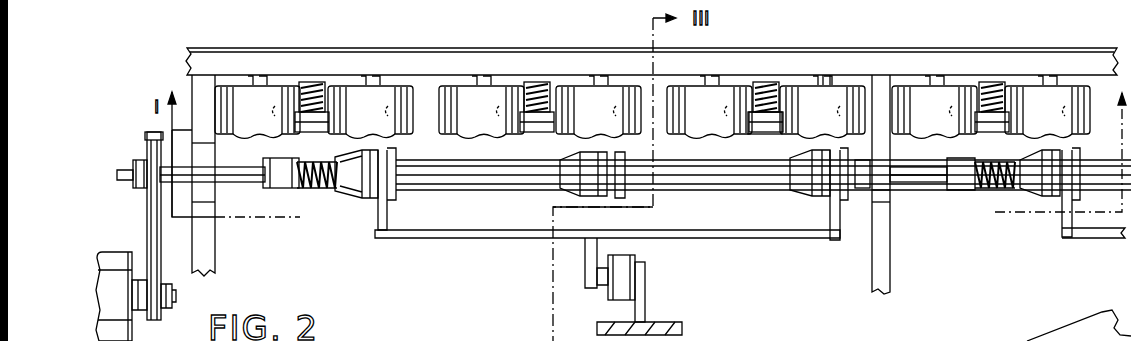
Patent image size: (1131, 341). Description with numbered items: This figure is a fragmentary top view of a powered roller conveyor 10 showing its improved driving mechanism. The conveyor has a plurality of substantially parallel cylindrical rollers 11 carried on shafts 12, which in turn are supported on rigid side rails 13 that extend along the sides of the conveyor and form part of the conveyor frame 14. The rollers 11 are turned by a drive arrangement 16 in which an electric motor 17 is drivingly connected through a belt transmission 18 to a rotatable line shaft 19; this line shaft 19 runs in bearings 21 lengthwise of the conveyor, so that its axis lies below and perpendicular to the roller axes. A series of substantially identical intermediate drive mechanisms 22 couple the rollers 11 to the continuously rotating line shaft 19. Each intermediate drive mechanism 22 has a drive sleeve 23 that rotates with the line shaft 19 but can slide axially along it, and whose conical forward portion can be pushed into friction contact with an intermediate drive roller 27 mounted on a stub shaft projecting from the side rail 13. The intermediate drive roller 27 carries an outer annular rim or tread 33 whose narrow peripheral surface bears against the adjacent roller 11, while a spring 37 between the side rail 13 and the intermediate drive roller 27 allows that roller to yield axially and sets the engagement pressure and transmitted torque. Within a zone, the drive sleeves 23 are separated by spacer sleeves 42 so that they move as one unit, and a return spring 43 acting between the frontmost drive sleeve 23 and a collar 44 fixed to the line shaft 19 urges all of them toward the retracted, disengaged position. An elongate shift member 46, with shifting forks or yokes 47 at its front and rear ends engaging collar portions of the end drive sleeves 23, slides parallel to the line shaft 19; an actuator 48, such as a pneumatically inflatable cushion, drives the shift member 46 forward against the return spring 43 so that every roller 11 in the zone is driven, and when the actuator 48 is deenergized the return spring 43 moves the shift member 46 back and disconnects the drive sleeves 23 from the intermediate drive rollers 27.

The powered roller conveyor 10 is at (430, 40).
The cylindrical rollers 11 is at (385, 100).
The shafts 12 is at (825, 75).
The side rails 13 is at (318, 58).
The conveyor frame 14 is at (205, 245).
The drive arrangement 16 is at (304, 243).
The electric motor 17 is at (112, 262).
The belt transmission 18 is at (152, 240).
The line shaft 19 is at (238, 178).
The bearings 21 is at (202, 163).
The intermediate drive mechanisms 22 is at (782, 193).
The drive sleeve 23 is at (370, 175).
The intermediate drive roller 27 is at (313, 132).
The annular rim or tread 33 is at (760, 140).
The spring 37 is at (766, 80).
The spacer sleeves 42 is at (475, 172).
The return spring 43 is at (308, 190).
The collar 44 is at (280, 168).
The shift member 46 is at (515, 238).
The shifting forks or yokes 47 is at (390, 190).
The actuator 48 is at (620, 278).